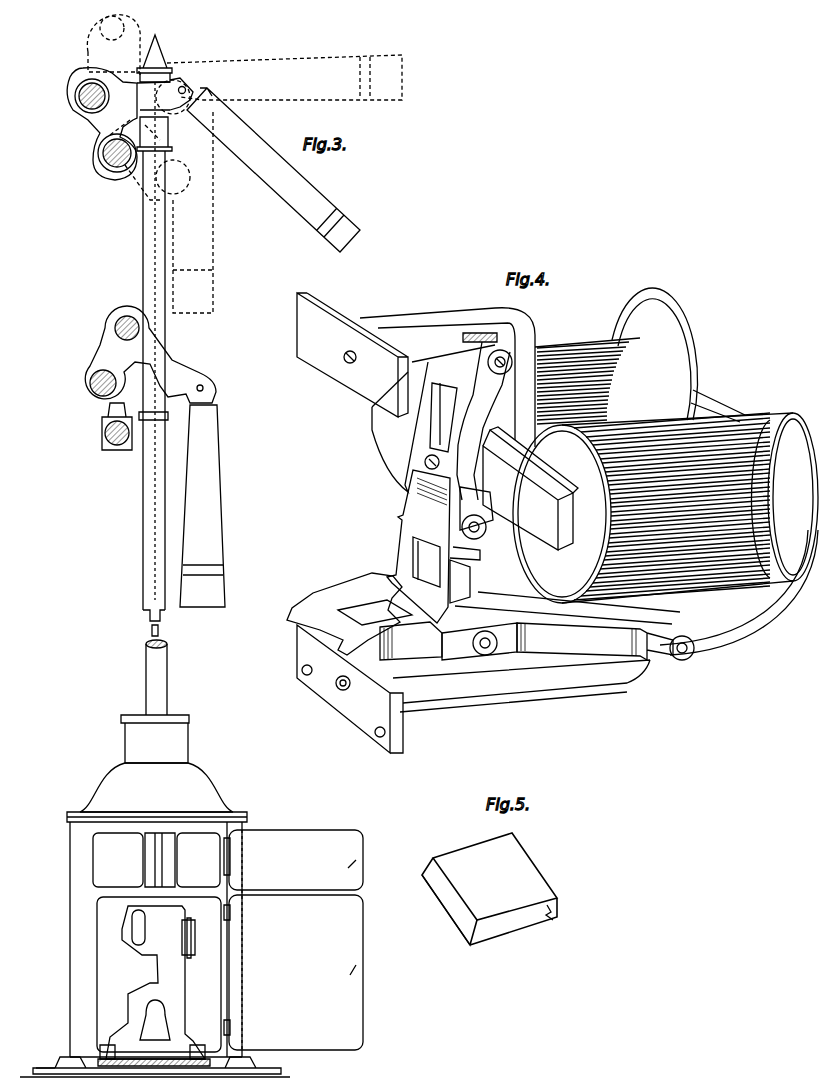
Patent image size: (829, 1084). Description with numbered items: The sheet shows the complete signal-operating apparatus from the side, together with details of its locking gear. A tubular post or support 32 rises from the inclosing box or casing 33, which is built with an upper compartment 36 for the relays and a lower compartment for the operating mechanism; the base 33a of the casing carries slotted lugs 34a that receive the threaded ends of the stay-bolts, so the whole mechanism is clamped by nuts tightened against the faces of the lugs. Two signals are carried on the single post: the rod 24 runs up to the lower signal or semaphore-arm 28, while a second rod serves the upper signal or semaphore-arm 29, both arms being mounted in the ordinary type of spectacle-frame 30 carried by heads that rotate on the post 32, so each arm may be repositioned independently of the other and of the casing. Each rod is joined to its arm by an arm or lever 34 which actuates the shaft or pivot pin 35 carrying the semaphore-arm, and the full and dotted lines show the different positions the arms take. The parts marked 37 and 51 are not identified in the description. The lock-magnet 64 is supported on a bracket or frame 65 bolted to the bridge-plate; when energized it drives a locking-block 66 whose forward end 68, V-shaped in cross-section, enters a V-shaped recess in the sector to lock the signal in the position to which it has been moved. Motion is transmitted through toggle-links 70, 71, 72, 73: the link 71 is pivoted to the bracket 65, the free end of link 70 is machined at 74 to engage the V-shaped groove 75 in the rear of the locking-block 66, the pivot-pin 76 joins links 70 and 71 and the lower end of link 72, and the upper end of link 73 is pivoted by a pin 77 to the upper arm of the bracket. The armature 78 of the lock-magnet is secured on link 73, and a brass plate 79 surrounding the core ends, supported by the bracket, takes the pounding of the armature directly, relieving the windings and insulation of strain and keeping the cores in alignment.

In FIG. 3, the rod 24 is at (143, 258).
In FIG. 3, the lower signal or semaphore-arm 28 is at (202, 506).
In FIG. 3, the upper signal or semaphore-arm 29 is at (273, 170).
In FIG. 3, the spectacle-frame 30 is at (141, 259).
In FIG. 3, the tubular post or support 32 is at (150, 683).
In FIG. 3, the inclosing box or casing 33 is at (80, 958).
In FIG. 3, the base 33a is at (45, 1068).
In FIG. 3, the arm or lever 34 is at (163, 58).
In FIG. 3, the slotted lugs 34a is at (190, 1052).
In FIG. 3, the shaft or pivot pin 35 is at (184, 88).
In FIG. 3, the upper compartment 36 is at (156, 860).
In FIG. 3, the key plate 37 is at (159, 978).
In FIG. 3, the clamp 51 is at (153, 110).
In FIG. 4, the lock-magnet 64 is at (640, 356).
In FIG. 4, the bracket or frame 65 is at (557, 641).
In FIG. 5, the locking-block 66 is at (489, 889).
In FIG. 5, the forward end of locking-block 68 is at (444, 902).
In FIG. 4, the toggle-link 70 is at (411, 641).
In FIG. 4, the toggle-link 71 is at (605, 641).
In FIG. 4, the toggle-link 72 is at (433, 546).
In FIG. 4, the toggle-link 73 is at (483, 416).
In FIG. 4, the machined free end of link 74 is at (349, 614).
In FIG. 5, the V-shaped groove 75 is at (553, 912).
In FIG. 4, the pivot-pin 76 is at (479, 641).
In FIG. 4, the pin 77 is at (497, 372).
In FIG. 4, the armature 78 is at (516, 490).
In FIG. 4, the brass plate 79 is at (548, 470).